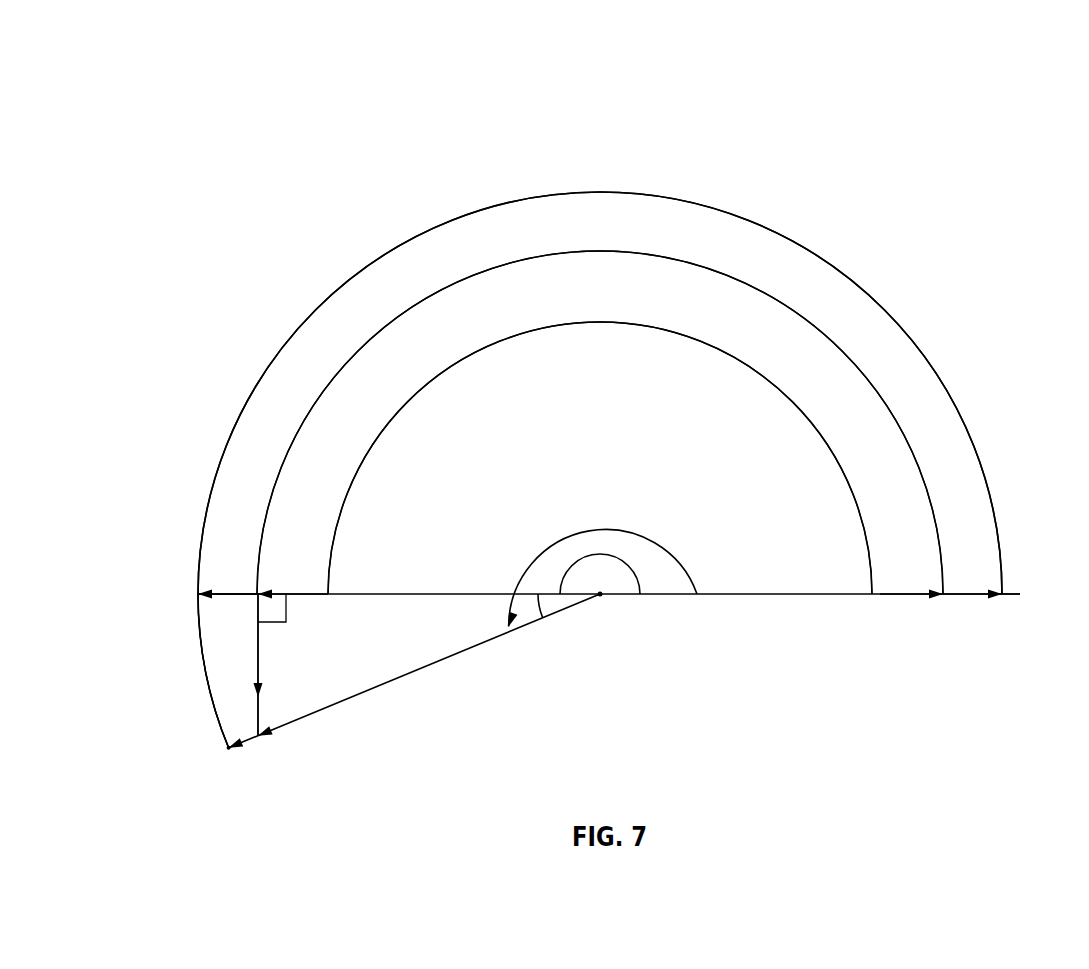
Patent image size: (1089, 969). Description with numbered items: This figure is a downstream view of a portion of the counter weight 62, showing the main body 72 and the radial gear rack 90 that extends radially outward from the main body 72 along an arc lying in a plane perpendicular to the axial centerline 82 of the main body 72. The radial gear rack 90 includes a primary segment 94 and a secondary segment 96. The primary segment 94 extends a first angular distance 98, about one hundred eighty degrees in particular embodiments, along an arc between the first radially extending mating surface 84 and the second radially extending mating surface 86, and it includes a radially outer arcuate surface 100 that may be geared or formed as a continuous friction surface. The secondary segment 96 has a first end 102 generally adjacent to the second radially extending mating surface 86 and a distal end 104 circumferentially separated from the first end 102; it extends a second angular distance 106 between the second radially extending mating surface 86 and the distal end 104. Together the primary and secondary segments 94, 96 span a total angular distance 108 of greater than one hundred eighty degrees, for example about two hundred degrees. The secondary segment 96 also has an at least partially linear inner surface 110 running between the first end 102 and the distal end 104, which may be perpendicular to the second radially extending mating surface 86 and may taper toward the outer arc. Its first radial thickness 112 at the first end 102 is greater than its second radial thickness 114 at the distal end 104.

The counter weight 62 is at (415, 130).
The radially outer arcuate surface 100 is at (440, 222).
The radial gear rack 90 is at (323, 272).
The primary segment 94 is at (554, 229).
The main body 72 is at (684, 299).
The first end 102 is at (197, 594).
The first radially extending mating surface 84 is at (910, 594).
The first radial thickness 112 is at (229, 594).
The second radially extending mating surface 86 is at (316, 595).
The inner surface 110 is at (259, 655).
The second radial thickness 114 is at (250, 745).
The distal end 104 is at (228, 750).
The secondary segment 96 is at (245, 675).
The total angular distance 108 is at (626, 500).
The first angular distance 98 is at (626, 566).
The second angular distance 106 is at (536, 606).
The axial centerline 82 is at (602, 598).